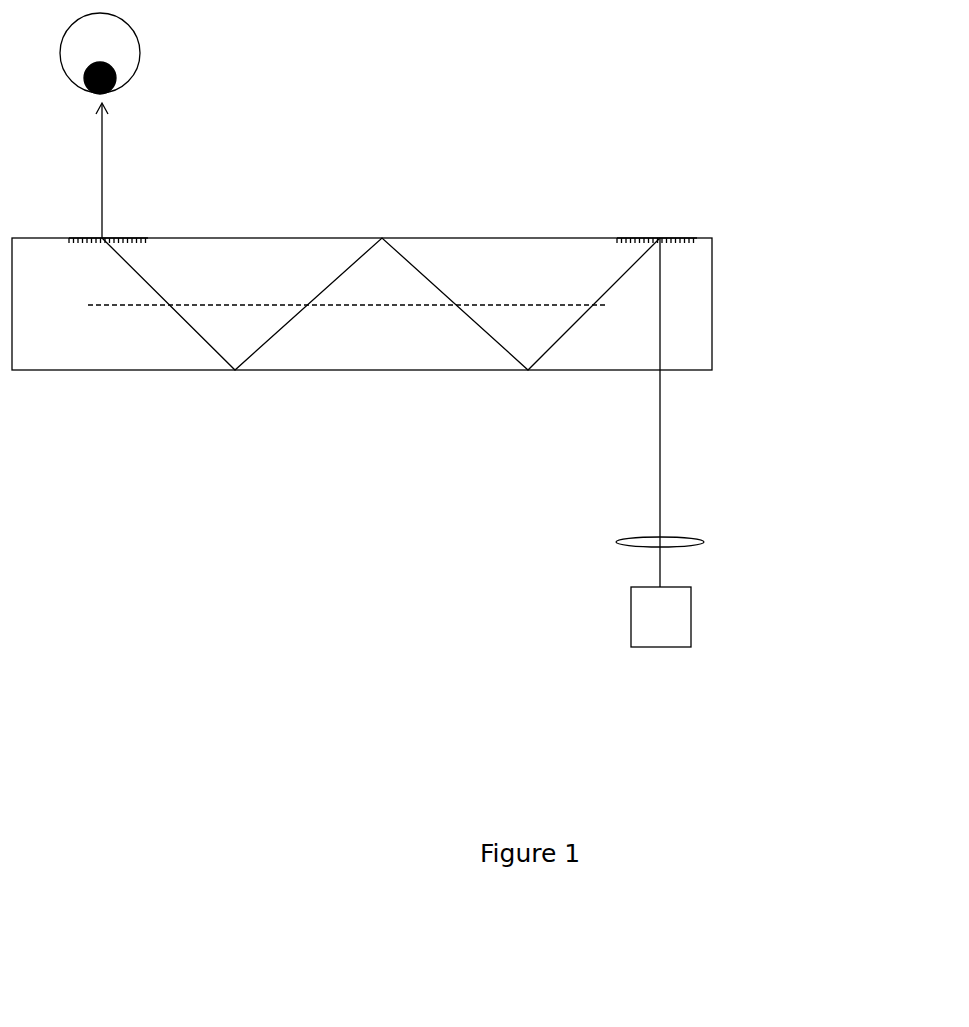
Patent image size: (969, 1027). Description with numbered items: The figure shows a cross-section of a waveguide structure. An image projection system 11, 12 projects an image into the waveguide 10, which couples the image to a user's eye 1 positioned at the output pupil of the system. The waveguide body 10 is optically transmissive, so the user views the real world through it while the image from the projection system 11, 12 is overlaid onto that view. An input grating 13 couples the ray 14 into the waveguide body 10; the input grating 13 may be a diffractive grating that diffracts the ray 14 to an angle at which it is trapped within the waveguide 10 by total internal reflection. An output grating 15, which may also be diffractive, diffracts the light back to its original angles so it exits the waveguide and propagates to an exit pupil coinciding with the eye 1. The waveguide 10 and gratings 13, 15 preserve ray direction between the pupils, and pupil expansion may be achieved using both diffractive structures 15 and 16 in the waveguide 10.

The eye 1 is at (148, 40).
The waveguide 10 is at (461, 221).
The image projection system 11 is at (661, 617).
The image projection system 12 is at (712, 540).
The input grating 13 is at (648, 237).
The ray 14 is at (668, 428).
The output grating 15 is at (120, 235).
The diffractive structure 16 is at (366, 313).